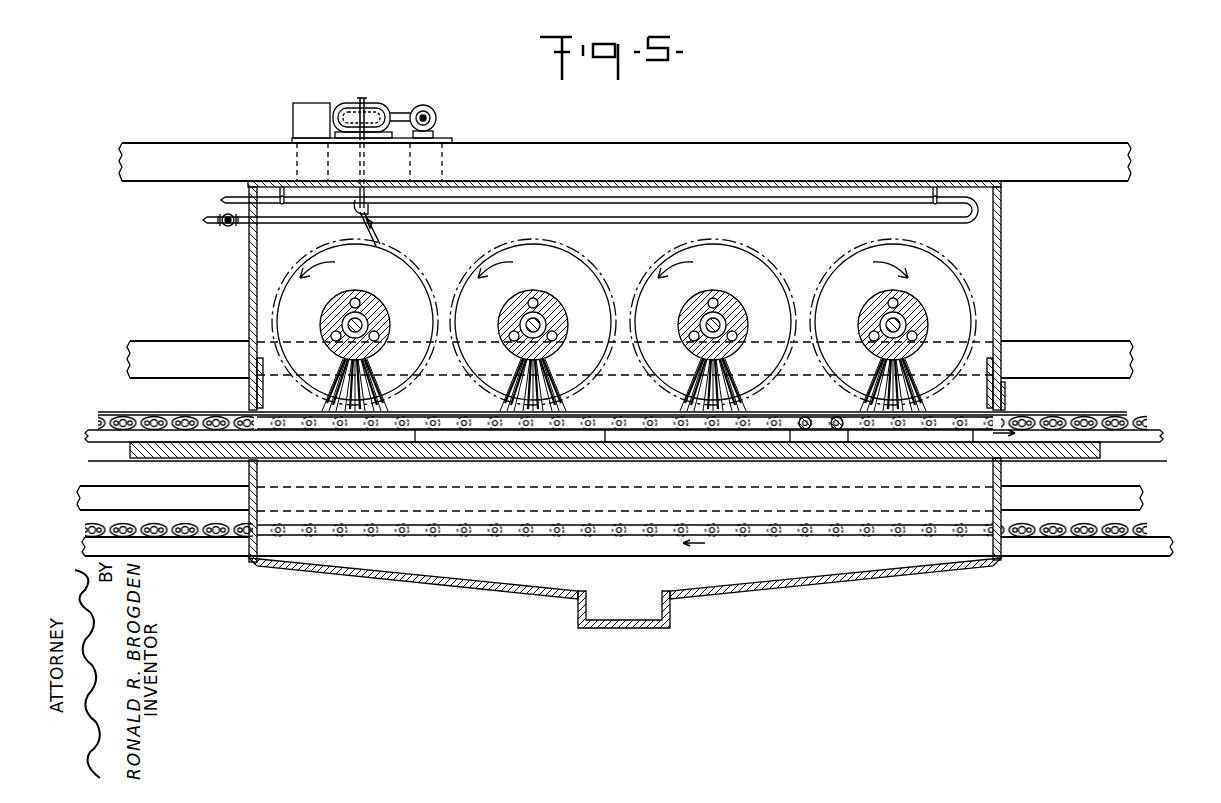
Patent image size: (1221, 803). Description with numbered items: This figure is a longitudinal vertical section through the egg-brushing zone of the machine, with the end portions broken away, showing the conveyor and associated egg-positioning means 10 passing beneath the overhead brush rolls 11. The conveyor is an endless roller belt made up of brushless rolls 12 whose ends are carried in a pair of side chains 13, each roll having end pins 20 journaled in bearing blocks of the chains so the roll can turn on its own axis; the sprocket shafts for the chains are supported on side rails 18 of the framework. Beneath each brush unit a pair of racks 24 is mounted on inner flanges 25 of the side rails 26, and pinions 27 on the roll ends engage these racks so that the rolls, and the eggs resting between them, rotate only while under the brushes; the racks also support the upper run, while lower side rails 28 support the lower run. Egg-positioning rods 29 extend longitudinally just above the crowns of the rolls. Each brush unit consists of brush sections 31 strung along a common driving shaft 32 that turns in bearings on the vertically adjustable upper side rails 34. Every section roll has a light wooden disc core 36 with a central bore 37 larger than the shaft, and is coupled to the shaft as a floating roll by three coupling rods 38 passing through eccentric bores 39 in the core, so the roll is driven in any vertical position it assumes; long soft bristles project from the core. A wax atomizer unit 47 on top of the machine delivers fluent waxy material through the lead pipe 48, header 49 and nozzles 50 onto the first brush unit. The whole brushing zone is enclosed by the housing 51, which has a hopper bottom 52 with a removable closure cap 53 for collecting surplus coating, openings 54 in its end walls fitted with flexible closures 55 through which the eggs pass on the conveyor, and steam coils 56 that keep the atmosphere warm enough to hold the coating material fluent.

The conveyor and associated egg-positioning means 10 is at (160, 392).
The overhead brush rolls 11 is at (295, 247).
The brushless rolls 12 is at (836, 430).
The side chains 13 is at (302, 415).
The side rails 18 is at (82, 508).
The pins 20 is at (474, 414).
The racks 24 is at (345, 442).
The inner flanges 25 is at (88, 456).
The side rails 26 is at (88, 436).
The pinions 27 is at (600, 414).
The lower side rails 28 is at (190, 556).
The rods 29 is at (214, 412).
The brush sections 31 is at (428, 255).
The driving shaft 32 is at (388, 312).
The upper side rails 34 is at (185, 348).
The disc core 36 is at (378, 300).
The central bore 37 is at (350, 323).
The coupling rods 38 is at (355, 298).
The eccentric bores 39 is at (332, 336).
The wax atomizer unit 47 is at (366, 100).
The lead pipe 48 is at (368, 210).
The header 49 is at (358, 204).
The nozzles 50 is at (372, 224).
The housing 51 is at (1001, 252).
The hopper bottom 52 is at (772, 589).
The removable closure cap 53 is at (580, 626).
The openings 54 is at (1000, 394).
The flexible closure 55 is at (256, 368).
The steam coils 56 is at (745, 203).